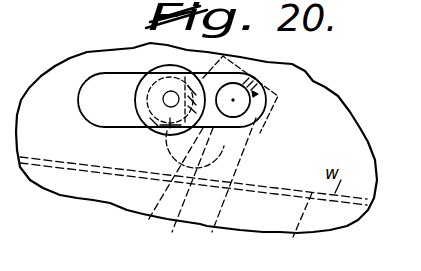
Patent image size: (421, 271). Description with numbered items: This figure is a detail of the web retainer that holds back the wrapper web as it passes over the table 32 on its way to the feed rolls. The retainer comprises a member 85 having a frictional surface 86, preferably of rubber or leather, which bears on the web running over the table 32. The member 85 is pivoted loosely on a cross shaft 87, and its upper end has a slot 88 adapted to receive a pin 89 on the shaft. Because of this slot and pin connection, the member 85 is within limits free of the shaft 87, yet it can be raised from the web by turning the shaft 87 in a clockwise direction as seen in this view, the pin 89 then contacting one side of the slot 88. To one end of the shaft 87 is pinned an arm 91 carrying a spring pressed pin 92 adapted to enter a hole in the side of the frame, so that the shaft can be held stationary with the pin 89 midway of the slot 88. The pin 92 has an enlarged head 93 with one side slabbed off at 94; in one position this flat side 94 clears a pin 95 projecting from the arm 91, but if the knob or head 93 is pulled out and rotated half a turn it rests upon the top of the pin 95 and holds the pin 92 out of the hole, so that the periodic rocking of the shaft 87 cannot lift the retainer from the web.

The arm 91 is at (92, 105).
The enlarged head 93 is at (162, 72).
The spring pressed pin 92 is at (165, 107).
The slot 88 is at (278, 101).
The cross shaft 87 is at (240, 108).
The pin 89 is at (258, 68).
The member 85 is at (228, 150).
The slabbed-off side 94 is at (160, 185).
The pin 95 is at (164, 240).
The frictional surface 86 is at (232, 190).
The table 32 is at (292, 242).